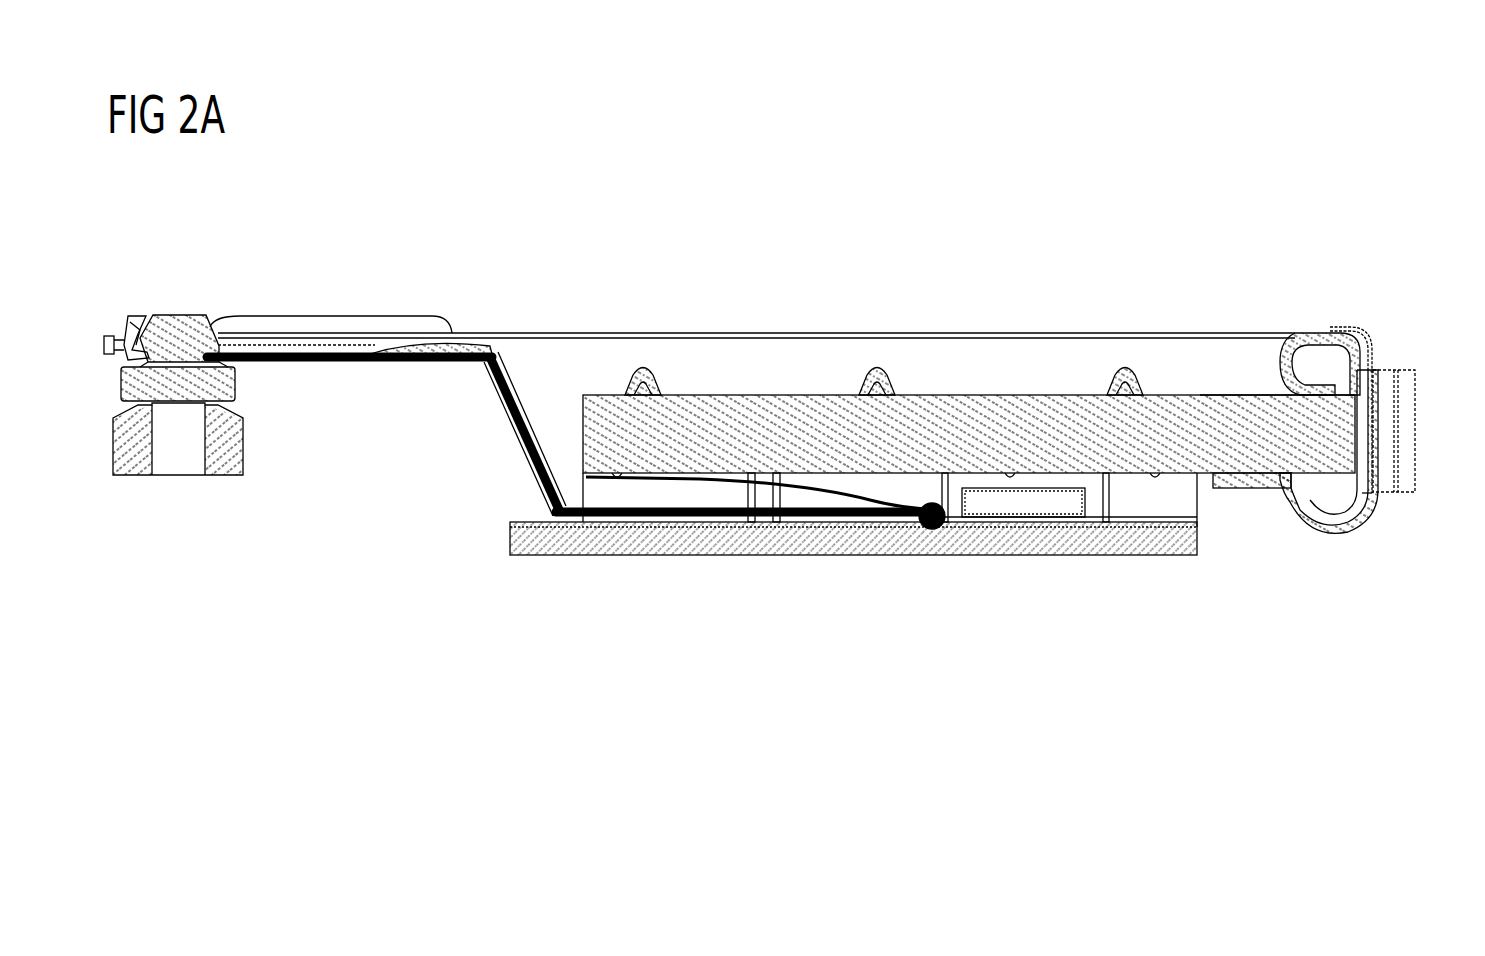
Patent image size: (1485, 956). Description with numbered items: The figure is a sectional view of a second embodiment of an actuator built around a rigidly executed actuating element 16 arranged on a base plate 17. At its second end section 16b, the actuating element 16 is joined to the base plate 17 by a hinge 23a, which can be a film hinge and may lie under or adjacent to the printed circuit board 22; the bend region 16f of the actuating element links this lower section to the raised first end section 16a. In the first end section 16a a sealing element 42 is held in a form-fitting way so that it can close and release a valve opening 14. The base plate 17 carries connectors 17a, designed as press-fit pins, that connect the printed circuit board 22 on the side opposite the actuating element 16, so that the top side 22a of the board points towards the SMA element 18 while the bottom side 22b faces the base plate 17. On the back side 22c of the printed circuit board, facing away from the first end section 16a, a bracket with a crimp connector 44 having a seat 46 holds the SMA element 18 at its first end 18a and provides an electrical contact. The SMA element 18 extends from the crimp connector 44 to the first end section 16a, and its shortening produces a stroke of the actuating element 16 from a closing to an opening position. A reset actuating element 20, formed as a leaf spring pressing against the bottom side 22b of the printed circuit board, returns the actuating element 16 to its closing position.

The valve opening 14 is at (178, 443).
The actuating element 16 is at (581, 498).
The first end section of the actuating element 16a is at (305, 370).
The second end section of the actuating element 16b is at (858, 518).
The bent portion of spring contact element 16f is at (558, 520).
The base plate 17 is at (1012, 540).
The connectors 17a is at (1125, 375).
The SMA element 18 is at (767, 332).
The first end of the SMA element 18a is at (1320, 333).
The reset actuating element 20 is at (734, 485).
The printed circuit board 22 is at (1003, 435).
The top side of the printed circuit board 22a is at (1243, 395).
The bottom side of the printed circuit board 22b is at (1203, 495).
The back side of the printed circuit board 22c is at (1355, 437).
The hinge 23a is at (933, 530).
The sealing element 42 is at (178, 336).
The crimp connector 44 is at (1357, 352).
The seat 46 is at (1385, 370).